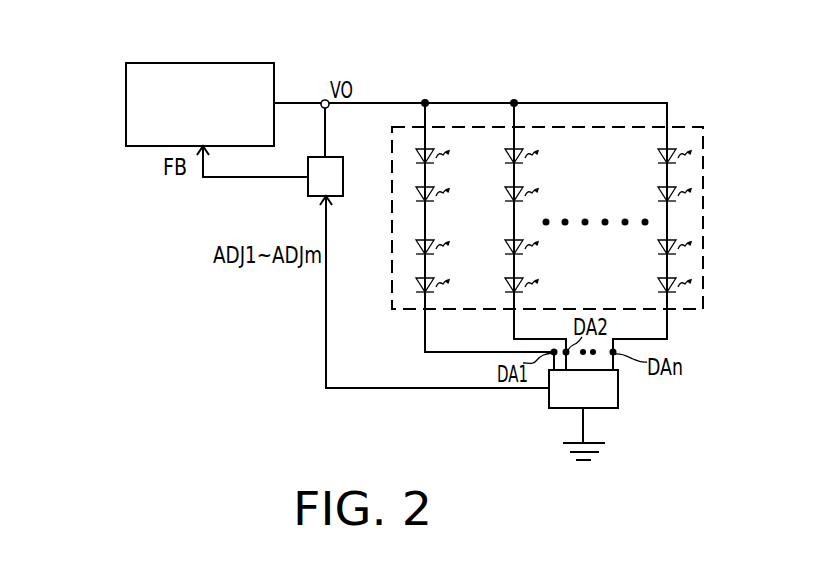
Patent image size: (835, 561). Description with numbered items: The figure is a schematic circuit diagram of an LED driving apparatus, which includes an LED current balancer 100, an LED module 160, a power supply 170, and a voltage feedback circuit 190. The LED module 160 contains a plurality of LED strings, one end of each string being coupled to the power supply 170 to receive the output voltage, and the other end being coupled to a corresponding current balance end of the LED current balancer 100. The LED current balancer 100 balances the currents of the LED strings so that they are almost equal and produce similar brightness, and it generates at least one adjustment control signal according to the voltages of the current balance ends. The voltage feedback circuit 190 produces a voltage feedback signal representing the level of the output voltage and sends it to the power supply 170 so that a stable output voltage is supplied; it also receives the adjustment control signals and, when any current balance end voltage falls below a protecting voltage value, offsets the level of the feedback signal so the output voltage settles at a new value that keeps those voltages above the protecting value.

The power supply 170 is at (126, 113).
The voltage feedback circuit 190 is at (315, 183).
The LED module 160 is at (699, 207).
The LED current balancer 100 is at (611, 399).